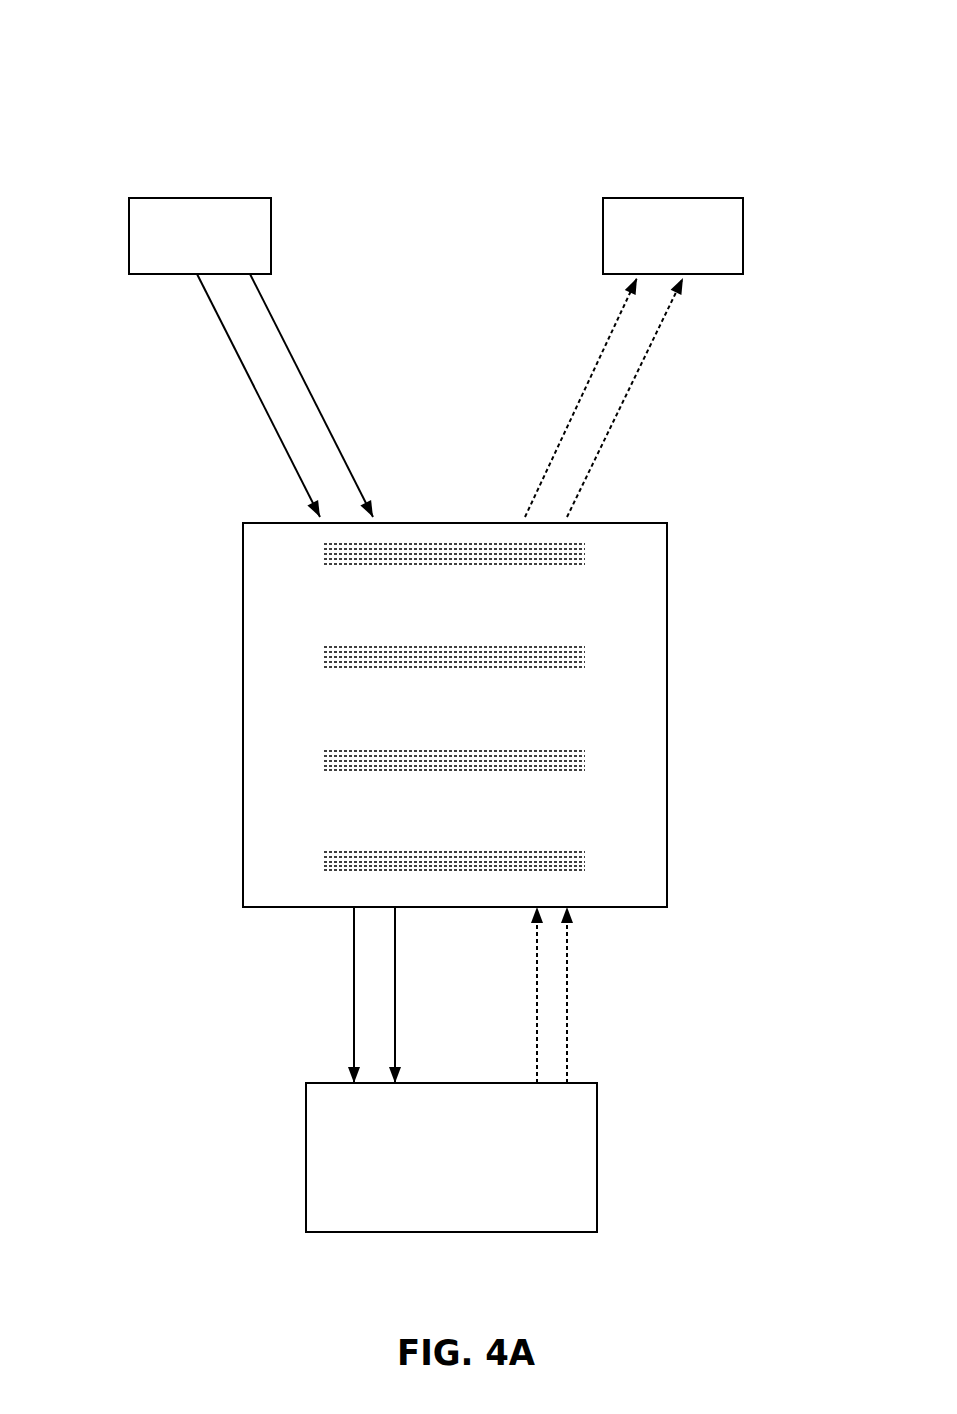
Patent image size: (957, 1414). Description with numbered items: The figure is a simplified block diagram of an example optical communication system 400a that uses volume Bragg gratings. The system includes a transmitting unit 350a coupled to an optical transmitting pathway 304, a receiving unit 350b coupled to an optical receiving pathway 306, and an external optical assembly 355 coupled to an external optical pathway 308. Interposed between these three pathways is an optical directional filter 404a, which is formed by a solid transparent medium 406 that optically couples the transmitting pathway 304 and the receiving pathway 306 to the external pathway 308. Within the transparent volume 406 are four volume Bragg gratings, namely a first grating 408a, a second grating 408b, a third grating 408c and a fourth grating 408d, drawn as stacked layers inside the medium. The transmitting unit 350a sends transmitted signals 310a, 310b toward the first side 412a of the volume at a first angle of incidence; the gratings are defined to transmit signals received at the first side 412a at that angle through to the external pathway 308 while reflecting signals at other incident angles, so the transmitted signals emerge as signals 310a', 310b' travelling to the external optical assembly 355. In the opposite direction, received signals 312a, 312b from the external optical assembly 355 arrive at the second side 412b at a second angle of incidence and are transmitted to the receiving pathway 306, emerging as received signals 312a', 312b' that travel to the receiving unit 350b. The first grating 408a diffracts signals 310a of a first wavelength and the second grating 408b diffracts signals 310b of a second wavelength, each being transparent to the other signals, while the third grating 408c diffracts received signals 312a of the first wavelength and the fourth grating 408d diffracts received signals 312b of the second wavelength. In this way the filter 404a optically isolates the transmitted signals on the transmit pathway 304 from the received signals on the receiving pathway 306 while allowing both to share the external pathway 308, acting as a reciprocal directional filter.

The optical communication system 400a is at (95, 58).
The transmitting unit 350a is at (212, 198).
The receiving unit 350b is at (697, 198).
The optical transmitting pathway 304 is at (249, 395).
The optical receiving pathway 306 is at (647, 397).
The transmitted signal 310a is at (246, 395).
The transmitted signal 310b is at (327, 395).
The received signal 312a' is at (562, 397).
The received signal 312b' is at (645, 397).
The optical directional filter 404a is at (439, 715).
The solid transparent medium 406 is at (252, 799).
The first side 412a is at (257, 515).
The second side 412b is at (285, 913).
The first grating 408a is at (586, 554).
The second grating 408b is at (586, 659).
The third grating 408c is at (586, 755).
The fourth grating 408d is at (586, 858).
The external optical pathway 308 is at (343, 995).
The transmitted signal 310a' is at (311, 995).
The transmitted signal 310b' is at (436, 995).
The received signal 312a is at (496, 995).
The received signal 312b is at (604, 995).
The external optical assembly 355 is at (451, 1157).